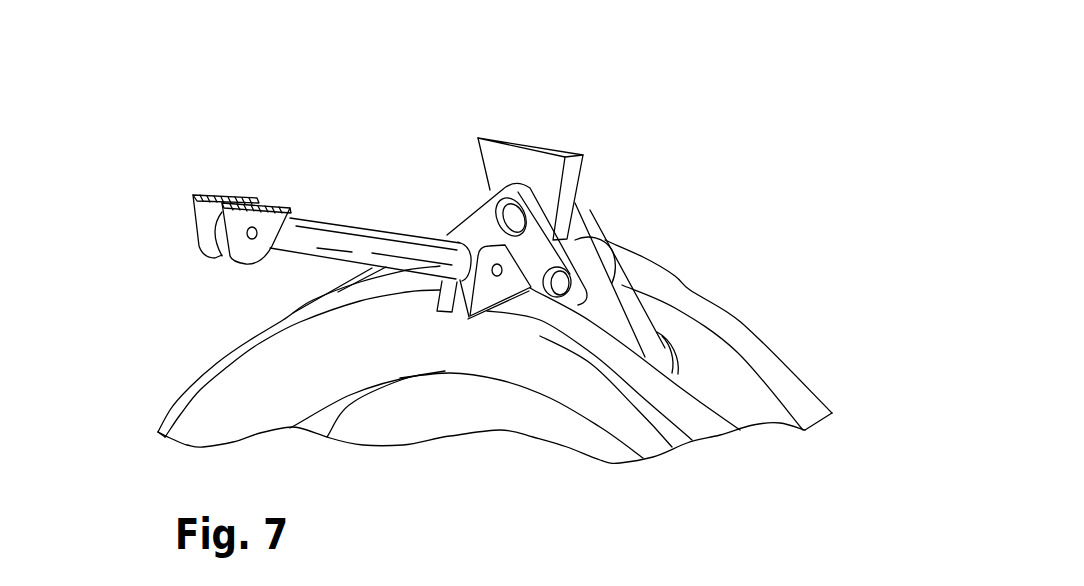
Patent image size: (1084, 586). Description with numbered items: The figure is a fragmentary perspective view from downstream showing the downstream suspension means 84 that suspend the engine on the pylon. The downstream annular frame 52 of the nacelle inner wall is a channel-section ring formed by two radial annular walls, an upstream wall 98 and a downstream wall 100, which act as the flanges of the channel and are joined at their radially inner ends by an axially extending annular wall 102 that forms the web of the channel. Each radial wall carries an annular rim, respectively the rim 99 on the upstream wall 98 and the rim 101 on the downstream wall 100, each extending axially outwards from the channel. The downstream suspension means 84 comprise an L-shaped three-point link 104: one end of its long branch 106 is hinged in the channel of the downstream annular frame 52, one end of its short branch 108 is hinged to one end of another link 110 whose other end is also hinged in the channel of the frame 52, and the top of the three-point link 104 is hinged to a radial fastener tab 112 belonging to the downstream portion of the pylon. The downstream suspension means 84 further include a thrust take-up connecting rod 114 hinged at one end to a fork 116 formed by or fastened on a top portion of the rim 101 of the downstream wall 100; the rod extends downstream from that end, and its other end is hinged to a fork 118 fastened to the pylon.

The downstream annular frame 52 is at (745, 300).
The downstream suspension means 84 is at (497, 126).
The upstream wall 98 is at (740, 388).
The annular rim 99 is at (806, 404).
The downstream wall 100 is at (593, 403).
The annular rim 101 is at (690, 413).
The annular wall 102 is at (347, 404).
The three-point link 104 is at (600, 221).
The long branch 106 is at (483, 225).
The short branch 108 is at (535, 262).
The link 110 is at (637, 318).
The radial fastener tab 112 is at (542, 170).
The thrust take-up connecting rod 114 is at (347, 225).
The fork 116 is at (481, 318).
The fork 118 is at (200, 218).